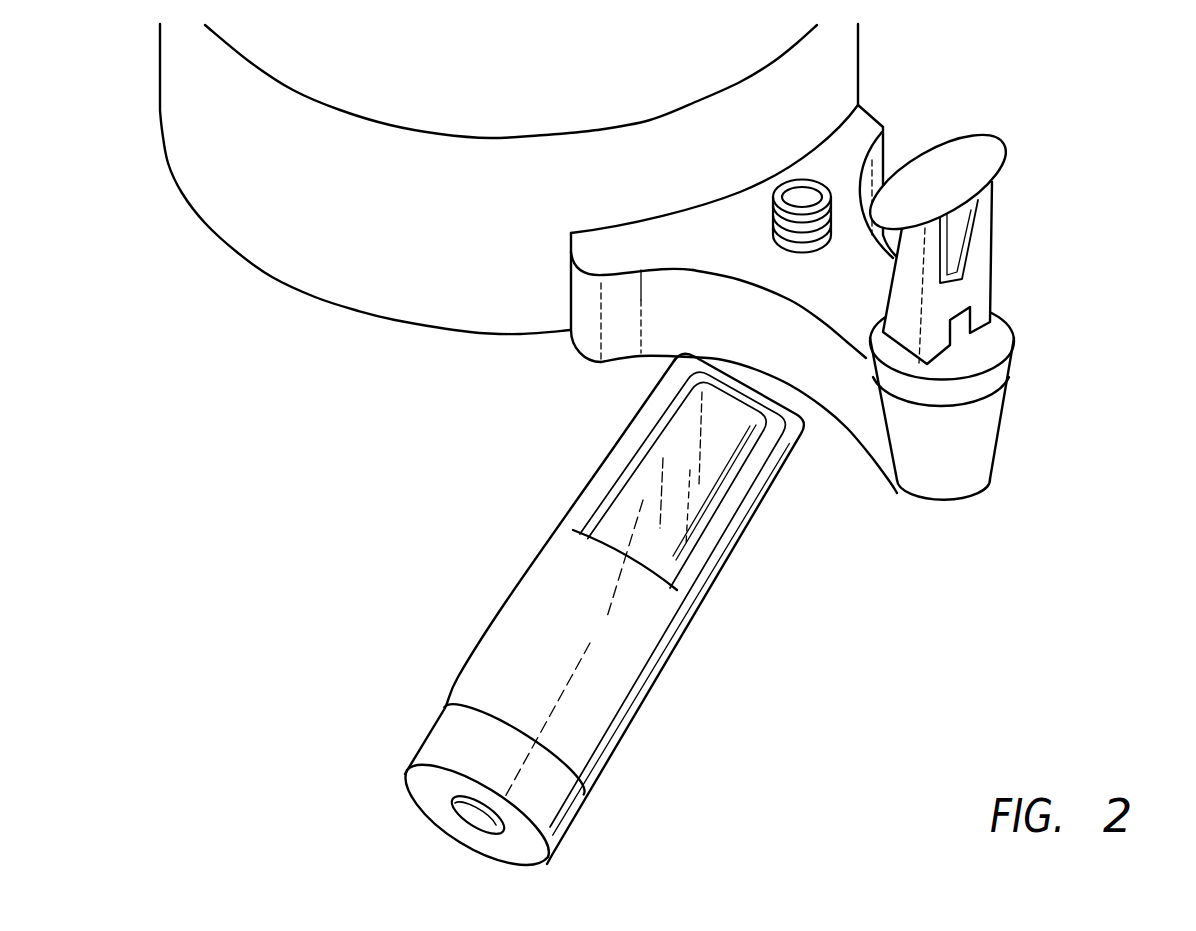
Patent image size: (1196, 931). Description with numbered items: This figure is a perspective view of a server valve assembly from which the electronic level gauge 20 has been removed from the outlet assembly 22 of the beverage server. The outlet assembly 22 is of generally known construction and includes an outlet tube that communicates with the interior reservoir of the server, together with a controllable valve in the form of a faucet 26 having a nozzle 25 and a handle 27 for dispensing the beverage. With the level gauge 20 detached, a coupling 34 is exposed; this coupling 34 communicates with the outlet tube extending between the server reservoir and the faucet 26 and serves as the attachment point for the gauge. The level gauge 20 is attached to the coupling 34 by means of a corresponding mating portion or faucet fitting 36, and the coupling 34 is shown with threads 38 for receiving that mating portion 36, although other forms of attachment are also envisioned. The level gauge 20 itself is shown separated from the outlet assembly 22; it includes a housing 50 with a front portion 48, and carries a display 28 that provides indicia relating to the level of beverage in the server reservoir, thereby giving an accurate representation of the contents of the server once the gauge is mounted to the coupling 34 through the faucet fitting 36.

The electronic level gauge 20 is at (569, 623).
The outlet assembly 22 is at (834, 455).
The nozzle 25 is at (962, 437).
The faucet 26 is at (976, 499).
The handle 27 is at (987, 222).
The display 28 is at (623, 507).
The coupling 34 is at (771, 212).
The faucet fitting 36 is at (474, 814).
The threads 38 is at (773, 232).
The front portion 48 is at (530, 630).
The housing 50 is at (462, 672).